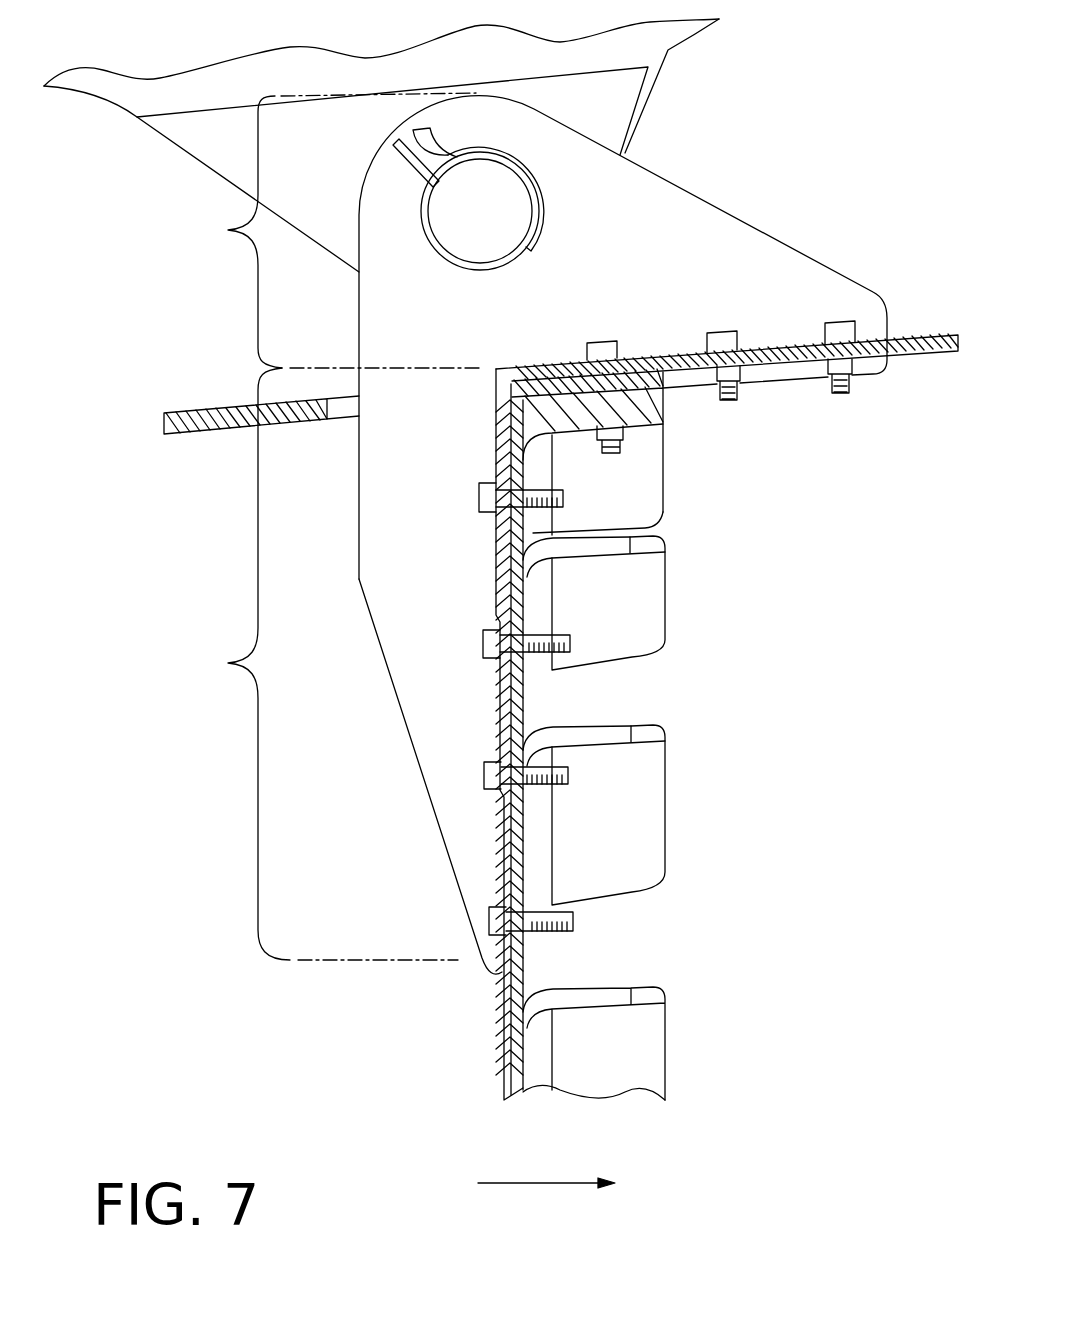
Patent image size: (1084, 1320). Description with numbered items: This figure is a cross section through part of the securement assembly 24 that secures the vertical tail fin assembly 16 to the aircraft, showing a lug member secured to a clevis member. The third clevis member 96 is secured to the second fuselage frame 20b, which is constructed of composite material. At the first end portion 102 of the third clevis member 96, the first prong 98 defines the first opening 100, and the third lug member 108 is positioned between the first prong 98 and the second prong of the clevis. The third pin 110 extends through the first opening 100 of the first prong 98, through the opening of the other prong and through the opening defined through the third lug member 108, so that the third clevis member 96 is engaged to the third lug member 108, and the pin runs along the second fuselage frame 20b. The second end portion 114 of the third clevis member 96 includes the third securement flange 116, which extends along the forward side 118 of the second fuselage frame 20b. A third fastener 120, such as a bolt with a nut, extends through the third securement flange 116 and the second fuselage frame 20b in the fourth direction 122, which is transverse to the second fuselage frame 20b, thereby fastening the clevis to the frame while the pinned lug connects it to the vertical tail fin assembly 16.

The vertical tail fin assembly 16 is at (358, 34).
The third lug member 108 is at (205, 143).
The first end portion 102 is at (228, 230).
The securement assembly 24 is at (245, 361).
The second end portion 114 is at (228, 663).
The first prong 98 is at (642, 180).
The third pin 110 is at (485, 212).
The first opening 100 is at (497, 268).
The third clevis member 96 is at (752, 296).
The third securement flange 116 is at (503, 593).
The forward side 118 is at (525, 552).
The second fuselage frame 20b is at (517, 600).
The third fastener 120 is at (512, 500).
The fourth direction 122 is at (532, 1185).